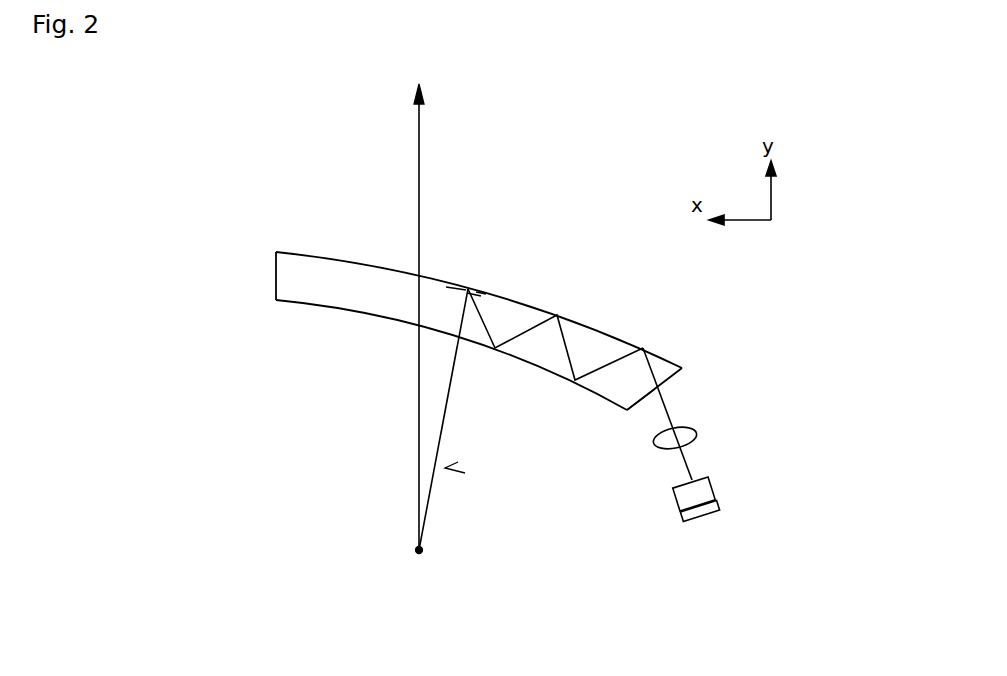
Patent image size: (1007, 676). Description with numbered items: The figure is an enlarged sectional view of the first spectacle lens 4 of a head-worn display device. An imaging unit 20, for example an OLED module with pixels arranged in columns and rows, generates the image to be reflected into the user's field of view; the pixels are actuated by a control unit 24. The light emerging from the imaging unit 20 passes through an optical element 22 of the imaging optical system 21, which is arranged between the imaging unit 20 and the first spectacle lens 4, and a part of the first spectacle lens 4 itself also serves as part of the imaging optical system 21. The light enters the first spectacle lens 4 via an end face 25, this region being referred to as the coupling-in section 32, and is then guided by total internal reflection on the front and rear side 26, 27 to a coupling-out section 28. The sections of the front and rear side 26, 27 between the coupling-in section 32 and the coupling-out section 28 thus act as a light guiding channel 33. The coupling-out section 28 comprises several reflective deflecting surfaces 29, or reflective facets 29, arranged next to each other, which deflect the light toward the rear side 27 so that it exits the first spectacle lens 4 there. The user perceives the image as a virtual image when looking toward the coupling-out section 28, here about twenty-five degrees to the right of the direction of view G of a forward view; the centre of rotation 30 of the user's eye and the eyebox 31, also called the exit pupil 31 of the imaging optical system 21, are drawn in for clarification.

The first spectacle lens 4 is at (512, 338).
The imaging unit 20 is at (702, 482).
The imaging optical system 21 is at (697, 420).
The optical element 22 is at (660, 447).
The control unit 24 is at (692, 522).
The end face 25 is at (677, 375).
The front side 26 is at (330, 255).
The rear side 27 is at (320, 307).
The coupling-out section 28 is at (468, 289).
The reflective deflecting surfaces 29 is at (480, 295).
The centre of rotation 30 is at (421, 552).
The eyebox 31 is at (412, 470).
The coupling-in section 32 is at (637, 407).
The light guiding channel 33 is at (543, 355).
The direction of view G is at (419, 130).